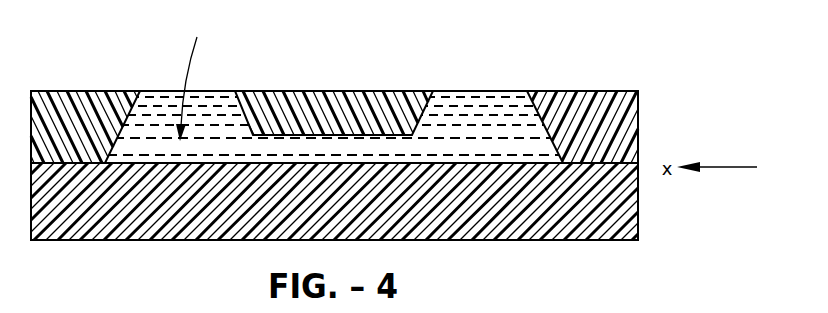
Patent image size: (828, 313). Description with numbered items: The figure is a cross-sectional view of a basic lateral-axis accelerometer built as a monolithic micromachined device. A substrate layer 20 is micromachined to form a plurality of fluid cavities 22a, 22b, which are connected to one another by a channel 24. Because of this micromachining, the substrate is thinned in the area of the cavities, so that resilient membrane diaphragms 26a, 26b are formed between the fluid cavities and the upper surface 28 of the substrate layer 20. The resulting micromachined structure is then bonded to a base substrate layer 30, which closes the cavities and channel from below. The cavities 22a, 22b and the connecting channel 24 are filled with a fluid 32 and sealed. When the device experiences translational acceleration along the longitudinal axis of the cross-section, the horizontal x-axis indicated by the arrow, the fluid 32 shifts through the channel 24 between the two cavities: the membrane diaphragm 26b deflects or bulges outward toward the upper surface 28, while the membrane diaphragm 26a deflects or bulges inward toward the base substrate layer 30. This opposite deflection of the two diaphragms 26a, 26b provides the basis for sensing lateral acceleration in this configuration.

The substrate layer 20 is at (639, 133).
The fluid cavity 22a is at (135, 130).
The fluid cavity 22b is at (493, 117).
The channel 24 is at (315, 147).
The membrane diaphragm 26a is at (162, 91).
The membrane diaphragm 26b is at (460, 95).
The upper surface 28 is at (368, 84).
The base substrate layer 30 is at (639, 210).
The fluid 32 is at (198, 75).